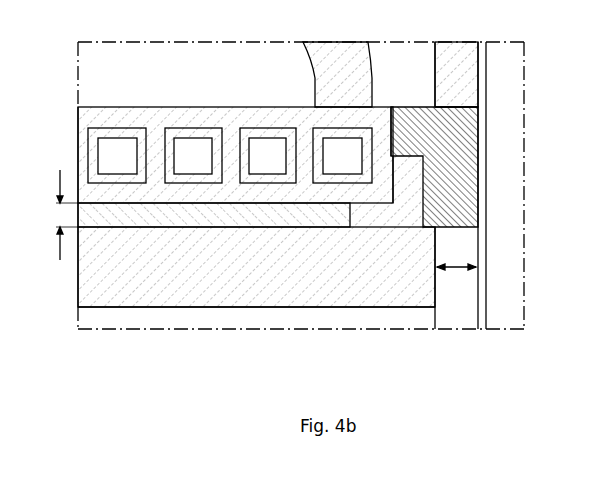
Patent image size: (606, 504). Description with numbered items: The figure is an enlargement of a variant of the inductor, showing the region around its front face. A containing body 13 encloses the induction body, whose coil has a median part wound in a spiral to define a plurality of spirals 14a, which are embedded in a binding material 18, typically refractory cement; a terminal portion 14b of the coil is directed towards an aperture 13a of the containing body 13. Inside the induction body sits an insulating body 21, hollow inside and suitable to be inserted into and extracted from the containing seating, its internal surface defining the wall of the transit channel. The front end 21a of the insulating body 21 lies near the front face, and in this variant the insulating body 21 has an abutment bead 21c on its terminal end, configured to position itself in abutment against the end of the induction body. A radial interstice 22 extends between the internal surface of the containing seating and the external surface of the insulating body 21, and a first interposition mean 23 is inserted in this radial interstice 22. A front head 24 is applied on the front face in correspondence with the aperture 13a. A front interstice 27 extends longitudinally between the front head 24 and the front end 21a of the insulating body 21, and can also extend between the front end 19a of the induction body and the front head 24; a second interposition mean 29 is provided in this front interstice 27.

The containing body 13 is at (458, 55).
The aperture 13a is at (457, 108).
The spirals 14a is at (120, 133).
The terminal portion 14b is at (333, 50).
The binding material 18 is at (210, 115).
The front end 19a is at (393, 129).
The insulating body 21 is at (223, 293).
The front end 21a is at (433, 296).
The abutment bead 21c is at (404, 200).
The radial interstice 22 is at (60, 215).
The interposition mean 23 is at (125, 218).
The front head 24 is at (480, 243).
The front interstice 27 is at (457, 268).
The second interposition mean 29 is at (463, 153).